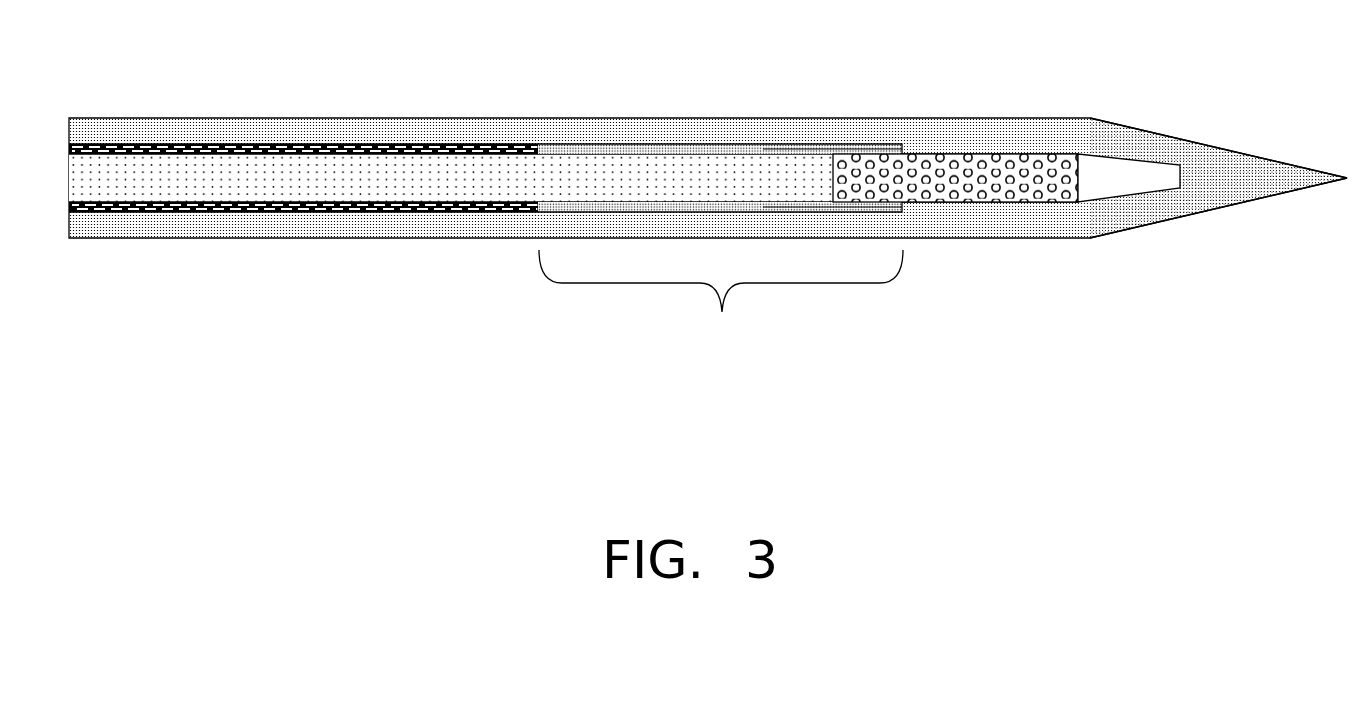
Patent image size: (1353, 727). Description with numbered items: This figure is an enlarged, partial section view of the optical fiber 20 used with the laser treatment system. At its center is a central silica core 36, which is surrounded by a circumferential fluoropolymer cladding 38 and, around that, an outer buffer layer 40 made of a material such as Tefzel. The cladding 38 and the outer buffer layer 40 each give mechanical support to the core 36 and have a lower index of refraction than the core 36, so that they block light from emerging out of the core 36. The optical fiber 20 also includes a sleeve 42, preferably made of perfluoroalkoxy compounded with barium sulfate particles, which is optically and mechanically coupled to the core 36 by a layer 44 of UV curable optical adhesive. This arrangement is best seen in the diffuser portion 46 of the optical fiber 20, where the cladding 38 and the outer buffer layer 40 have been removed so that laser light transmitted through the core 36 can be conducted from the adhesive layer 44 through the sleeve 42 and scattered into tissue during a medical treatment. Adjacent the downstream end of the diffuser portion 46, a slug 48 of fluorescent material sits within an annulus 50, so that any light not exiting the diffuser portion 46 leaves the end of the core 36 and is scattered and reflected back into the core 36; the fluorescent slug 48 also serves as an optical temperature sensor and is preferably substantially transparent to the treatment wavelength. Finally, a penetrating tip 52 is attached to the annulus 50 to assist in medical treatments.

The optical fiber 20 is at (557, 118).
The central silica core 36 is at (435, 175).
The circumferential fluoropolymer cladding 38 is at (328, 150).
The outer buffer layer 40 is at (223, 143).
The sleeve 42 is at (132, 128).
The layer of UV curable optical adhesive 44 is at (655, 147).
The diffuser portion 46 is at (721, 302).
The slug of fluorescent material 48 is at (977, 172).
The annulus 50 is at (1033, 150).
The penetrating tip 52 is at (1257, 173).